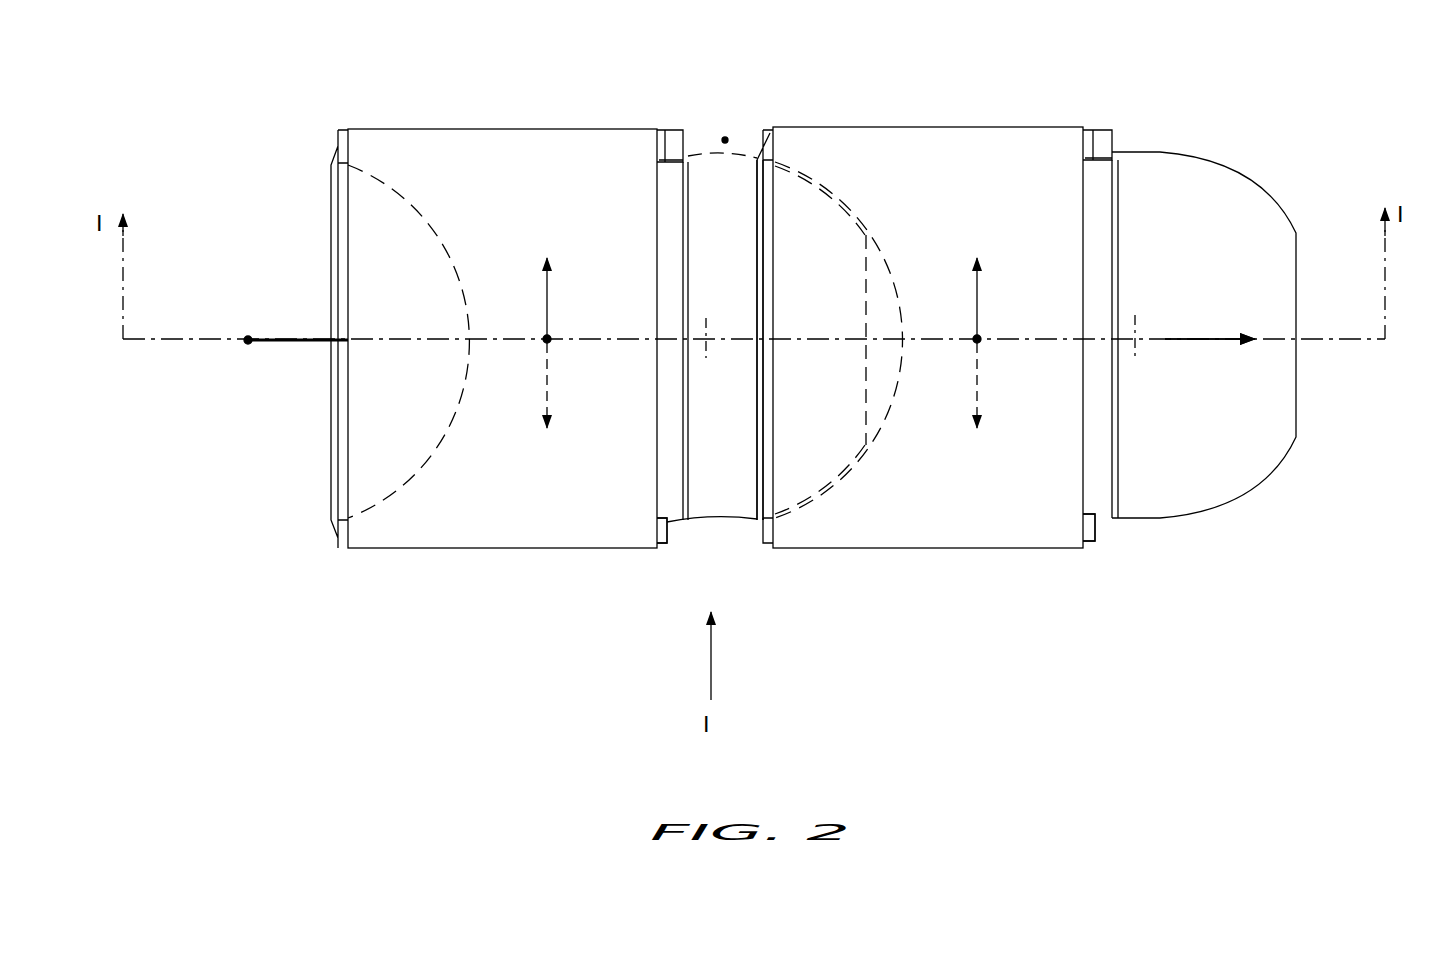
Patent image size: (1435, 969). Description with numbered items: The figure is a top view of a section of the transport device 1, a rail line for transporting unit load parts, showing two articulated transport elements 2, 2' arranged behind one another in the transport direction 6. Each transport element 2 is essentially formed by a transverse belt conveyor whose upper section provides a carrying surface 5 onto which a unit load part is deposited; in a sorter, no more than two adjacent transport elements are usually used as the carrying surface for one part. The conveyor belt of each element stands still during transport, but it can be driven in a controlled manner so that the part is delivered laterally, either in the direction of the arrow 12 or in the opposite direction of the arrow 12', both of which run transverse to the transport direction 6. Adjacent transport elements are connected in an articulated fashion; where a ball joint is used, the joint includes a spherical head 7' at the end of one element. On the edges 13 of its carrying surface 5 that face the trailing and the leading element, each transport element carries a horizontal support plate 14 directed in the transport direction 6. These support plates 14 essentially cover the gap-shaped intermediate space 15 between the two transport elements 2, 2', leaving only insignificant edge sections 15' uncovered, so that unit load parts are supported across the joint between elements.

The transport device 1 is at (509, 348).
The transport element 2 is at (509, 295).
The transport element 2' is at (937, 295).
The carrying surface 5 is at (543, 210).
The transport direction 6 is at (1192, 340).
The spherical head 7' is at (296, 300).
The transport direction of the conveyor belt 12 is at (795, 278).
The transport direction of the conveyor belt 12' is at (799, 398).
The edge of the carrying surface 13 is at (663, 558).
The support plate 14 is at (738, 275).
The intermediate space 15 is at (777, 388).
The edge section 15' is at (680, 106).